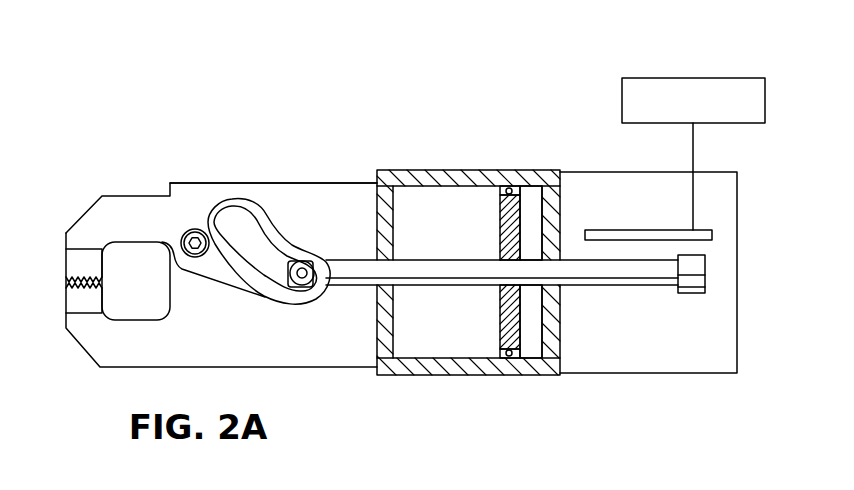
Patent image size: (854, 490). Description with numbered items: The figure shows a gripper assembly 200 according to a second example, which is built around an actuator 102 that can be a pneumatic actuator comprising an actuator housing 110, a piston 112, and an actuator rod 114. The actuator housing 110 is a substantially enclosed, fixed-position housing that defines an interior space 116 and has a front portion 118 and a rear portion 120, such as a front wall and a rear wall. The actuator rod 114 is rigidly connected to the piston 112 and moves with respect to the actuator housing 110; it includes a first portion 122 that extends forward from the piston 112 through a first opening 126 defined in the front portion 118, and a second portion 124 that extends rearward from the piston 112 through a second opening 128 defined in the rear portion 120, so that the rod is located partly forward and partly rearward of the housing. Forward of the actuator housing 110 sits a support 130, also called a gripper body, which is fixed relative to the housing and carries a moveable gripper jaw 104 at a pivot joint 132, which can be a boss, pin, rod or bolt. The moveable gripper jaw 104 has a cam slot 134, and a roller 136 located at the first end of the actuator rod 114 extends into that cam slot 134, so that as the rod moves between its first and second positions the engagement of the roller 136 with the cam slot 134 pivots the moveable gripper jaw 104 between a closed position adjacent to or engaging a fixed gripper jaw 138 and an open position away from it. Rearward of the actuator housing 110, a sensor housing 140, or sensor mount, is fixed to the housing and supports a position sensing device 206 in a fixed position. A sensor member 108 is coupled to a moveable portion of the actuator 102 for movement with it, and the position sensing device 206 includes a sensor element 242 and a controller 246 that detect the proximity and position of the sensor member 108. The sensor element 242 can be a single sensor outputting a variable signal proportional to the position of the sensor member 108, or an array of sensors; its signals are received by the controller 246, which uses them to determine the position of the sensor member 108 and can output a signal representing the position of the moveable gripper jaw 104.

The gripper assembly 200 is at (117, 130).
The moveable gripper jaw 104 is at (78, 213).
The fixed gripper jaw 138 is at (90, 370).
The support 130 is at (283, 183).
The pivot joint 132 is at (182, 232).
The cam slot 134 is at (230, 205).
The roller 136 is at (286, 282).
The actuator 102 is at (533, 164).
The actuator housing 110 is at (383, 170).
The front portion 118 is at (374, 192).
The rear portion 120 is at (562, 353).
The interior space 116 is at (433, 198).
The actuator rod 114 is at (447, 275).
The piston 112 is at (496, 198).
The first opening 126 is at (380, 268).
The first portion 122 is at (346, 287).
The second opening 128 is at (565, 277).
The second portion 124 is at (637, 278).
The sensor member 108 is at (693, 292).
The sensor housing 140 is at (695, 377).
The sensor element 242 is at (600, 232).
The controller 246 is at (682, 78).
The position sensing device 206 is at (625, 73).